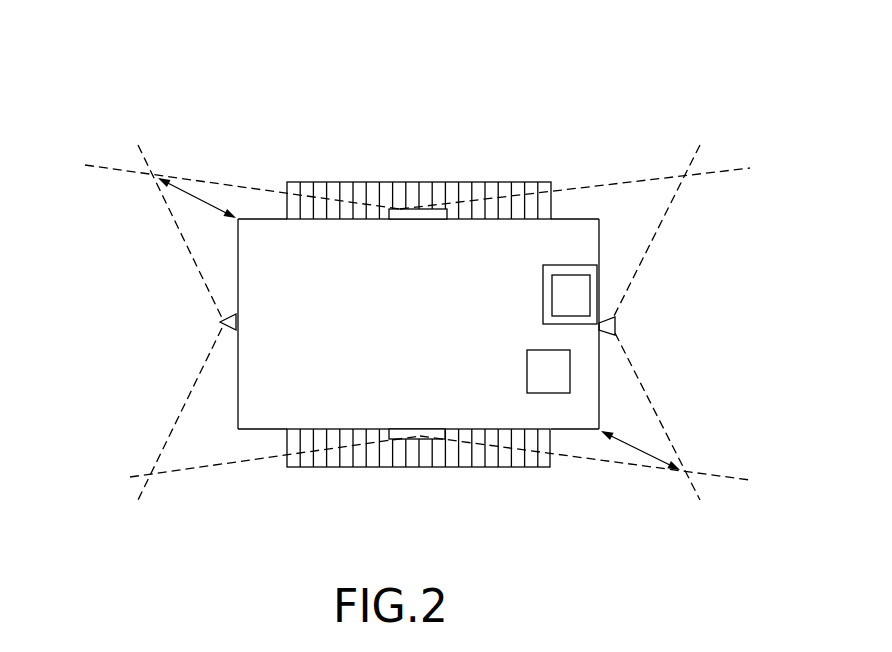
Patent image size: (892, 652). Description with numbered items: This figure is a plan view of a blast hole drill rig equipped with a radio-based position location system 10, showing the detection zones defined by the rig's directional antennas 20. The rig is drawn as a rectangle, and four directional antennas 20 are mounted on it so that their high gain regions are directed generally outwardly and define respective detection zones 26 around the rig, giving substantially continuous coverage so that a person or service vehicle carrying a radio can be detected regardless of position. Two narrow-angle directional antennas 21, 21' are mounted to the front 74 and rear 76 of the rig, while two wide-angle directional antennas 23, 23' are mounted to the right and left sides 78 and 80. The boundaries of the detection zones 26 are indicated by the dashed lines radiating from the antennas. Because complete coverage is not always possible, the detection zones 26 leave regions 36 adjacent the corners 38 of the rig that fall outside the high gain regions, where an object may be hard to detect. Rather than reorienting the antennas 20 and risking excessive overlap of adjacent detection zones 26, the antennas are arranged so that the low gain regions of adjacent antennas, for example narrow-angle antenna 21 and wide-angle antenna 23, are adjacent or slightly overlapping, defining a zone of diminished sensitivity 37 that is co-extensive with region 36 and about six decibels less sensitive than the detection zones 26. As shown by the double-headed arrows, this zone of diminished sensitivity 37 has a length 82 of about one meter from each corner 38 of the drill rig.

The radio-based position location system 10 is at (150, 105).
The directional antenna 20 is at (432, 200).
The narrow-angle directional antenna 21 is at (631, 302).
The narrow-angle directional antenna 21' is at (203, 307).
The wide-angle directional antenna 23 is at (431, 472).
The wide-angle directional antenna 23' is at (415, 179).
The detection zone 26 is at (180, 232).
The region adjacent the corners 36 is at (200, 210).
The zone of diminished sensitivity 37 is at (637, 257).
The corner 38 is at (240, 222).
The front 74 is at (600, 415).
The rear 76 is at (237, 385).
The right side 78 is at (265, 430).
The left side 80 is at (260, 218).
The length 82 is at (203, 184).